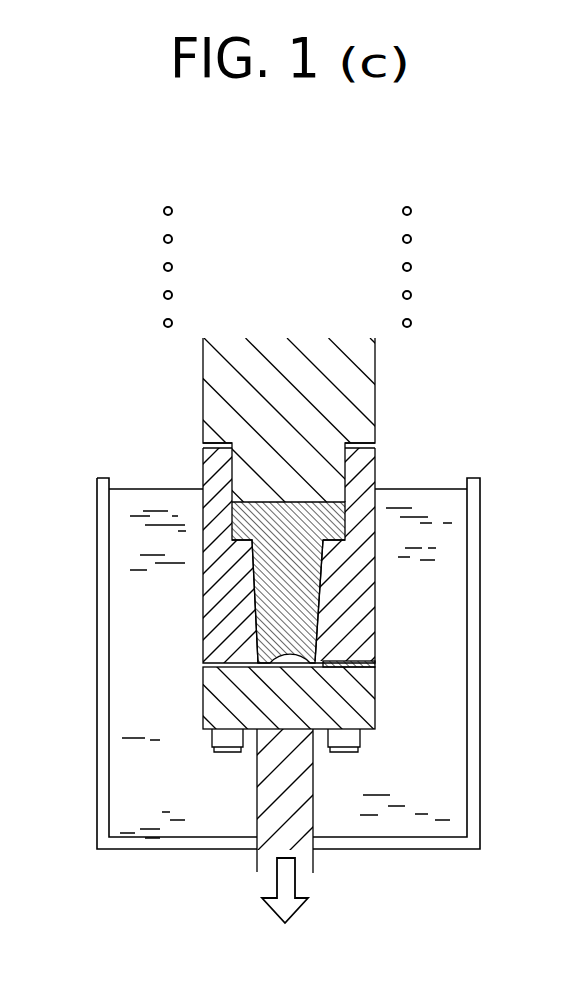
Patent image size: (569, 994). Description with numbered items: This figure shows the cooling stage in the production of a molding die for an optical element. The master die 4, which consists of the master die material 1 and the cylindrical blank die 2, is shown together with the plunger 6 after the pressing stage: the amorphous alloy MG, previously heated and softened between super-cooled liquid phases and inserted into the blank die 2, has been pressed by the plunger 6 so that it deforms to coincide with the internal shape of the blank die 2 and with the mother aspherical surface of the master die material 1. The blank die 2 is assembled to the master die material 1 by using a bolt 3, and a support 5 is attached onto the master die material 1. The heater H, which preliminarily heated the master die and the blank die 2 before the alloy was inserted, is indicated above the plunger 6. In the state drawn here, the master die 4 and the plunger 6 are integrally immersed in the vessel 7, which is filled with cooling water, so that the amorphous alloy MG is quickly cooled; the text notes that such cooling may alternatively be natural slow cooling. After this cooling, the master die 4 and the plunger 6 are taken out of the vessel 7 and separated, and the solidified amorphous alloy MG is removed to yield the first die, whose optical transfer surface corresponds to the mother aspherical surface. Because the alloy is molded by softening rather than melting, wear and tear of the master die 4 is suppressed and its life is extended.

The master die material 1 is at (352, 702).
The blank die 2 is at (360, 584).
The bolt 3 is at (230, 752).
The master die 4 is at (388, 475).
The support 5 is at (302, 850).
The plunger 6 is at (360, 397).
The vessel 7 is at (480, 607).
The heater H is at (164, 267).
The amorphous alloy MG is at (230, 510).